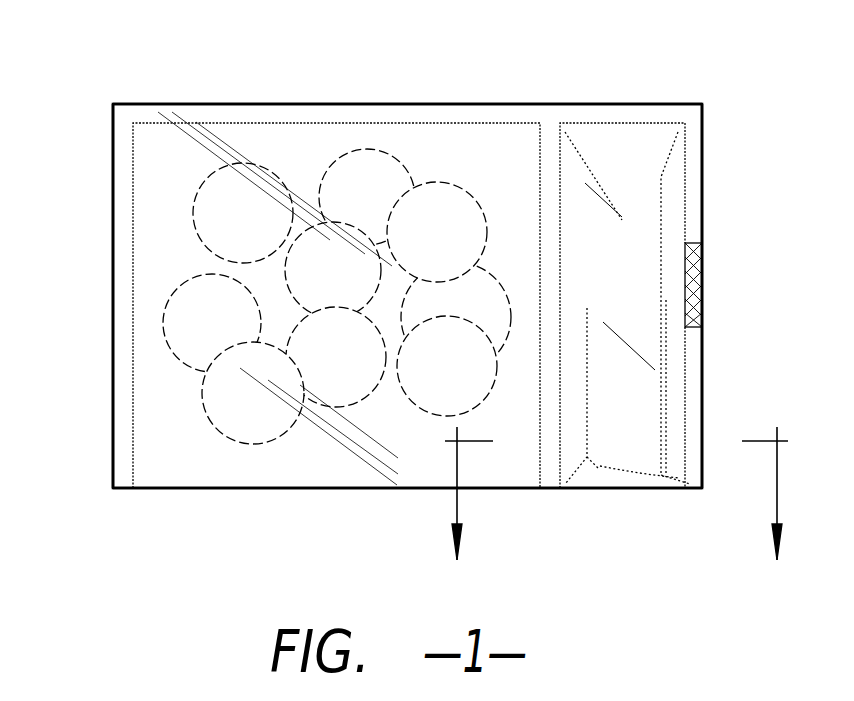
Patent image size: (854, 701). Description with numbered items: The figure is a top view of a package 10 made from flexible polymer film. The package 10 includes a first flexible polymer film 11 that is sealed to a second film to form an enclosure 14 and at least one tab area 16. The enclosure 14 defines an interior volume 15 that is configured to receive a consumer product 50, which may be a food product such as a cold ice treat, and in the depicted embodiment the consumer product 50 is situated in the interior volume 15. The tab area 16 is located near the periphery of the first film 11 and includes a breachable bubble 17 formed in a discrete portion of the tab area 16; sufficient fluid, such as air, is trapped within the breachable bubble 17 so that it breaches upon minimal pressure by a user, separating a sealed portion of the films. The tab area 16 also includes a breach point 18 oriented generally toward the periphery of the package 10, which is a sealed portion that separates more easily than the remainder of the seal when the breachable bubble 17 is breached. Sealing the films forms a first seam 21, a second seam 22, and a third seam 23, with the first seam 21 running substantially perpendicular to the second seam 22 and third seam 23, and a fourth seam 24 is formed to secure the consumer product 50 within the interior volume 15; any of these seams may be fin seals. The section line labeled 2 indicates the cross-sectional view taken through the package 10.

The package 10 is at (127, 60).
The first flexible polymer film 11 is at (133, 205).
The enclosure 14 is at (323, 488).
The interior volume 15 is at (218, 455).
The tab area 16 is at (605, 490).
The breachable bubble 17 is at (620, 445).
The breach point 18 is at (697, 287).
The first seam 21 is at (472, 113).
The second seam 22 is at (693, 182).
The third seam 23 is at (550, 135).
The fourth seam 24 is at (122, 303).
The consumer product 50 is at (370, 150).
The section line 2- 2 is at (630, 497).